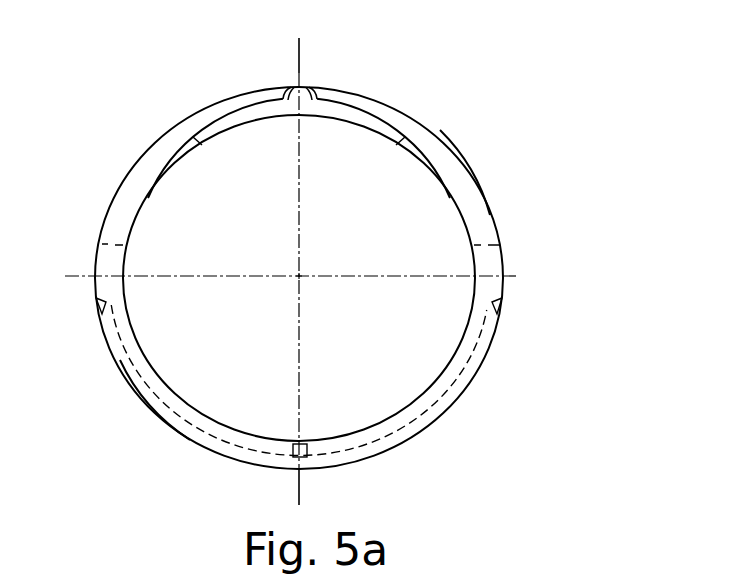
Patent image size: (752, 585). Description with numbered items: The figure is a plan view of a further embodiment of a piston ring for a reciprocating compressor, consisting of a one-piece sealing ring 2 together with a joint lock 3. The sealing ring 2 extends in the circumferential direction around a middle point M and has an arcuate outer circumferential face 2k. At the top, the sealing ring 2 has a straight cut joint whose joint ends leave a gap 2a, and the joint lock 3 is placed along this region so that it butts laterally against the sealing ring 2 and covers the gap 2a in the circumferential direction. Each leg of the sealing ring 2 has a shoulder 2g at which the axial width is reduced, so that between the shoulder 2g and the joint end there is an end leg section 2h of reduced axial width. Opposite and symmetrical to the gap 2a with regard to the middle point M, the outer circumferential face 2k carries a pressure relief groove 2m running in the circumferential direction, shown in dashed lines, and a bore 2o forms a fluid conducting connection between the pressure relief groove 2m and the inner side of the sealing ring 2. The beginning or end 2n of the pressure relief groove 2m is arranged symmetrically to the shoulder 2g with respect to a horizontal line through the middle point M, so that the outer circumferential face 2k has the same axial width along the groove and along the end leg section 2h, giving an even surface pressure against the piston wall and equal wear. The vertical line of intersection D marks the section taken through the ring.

The sealing ring 2 is at (497, 260).
The gap 2a is at (302, 88).
The shoulder 2g is at (492, 246).
The end leg section 2h is at (468, 176).
The outer circumferential face 2k is at (148, 406).
The pressure relief groove 2m is at (410, 432).
The beginning or end of the pressure relief groove 2n is at (98, 310).
The bore 2o is at (300, 444).
The joint lock 3 is at (345, 118).
The middle point M is at (301, 271).
The line of intersection D- D is at (290, 55).